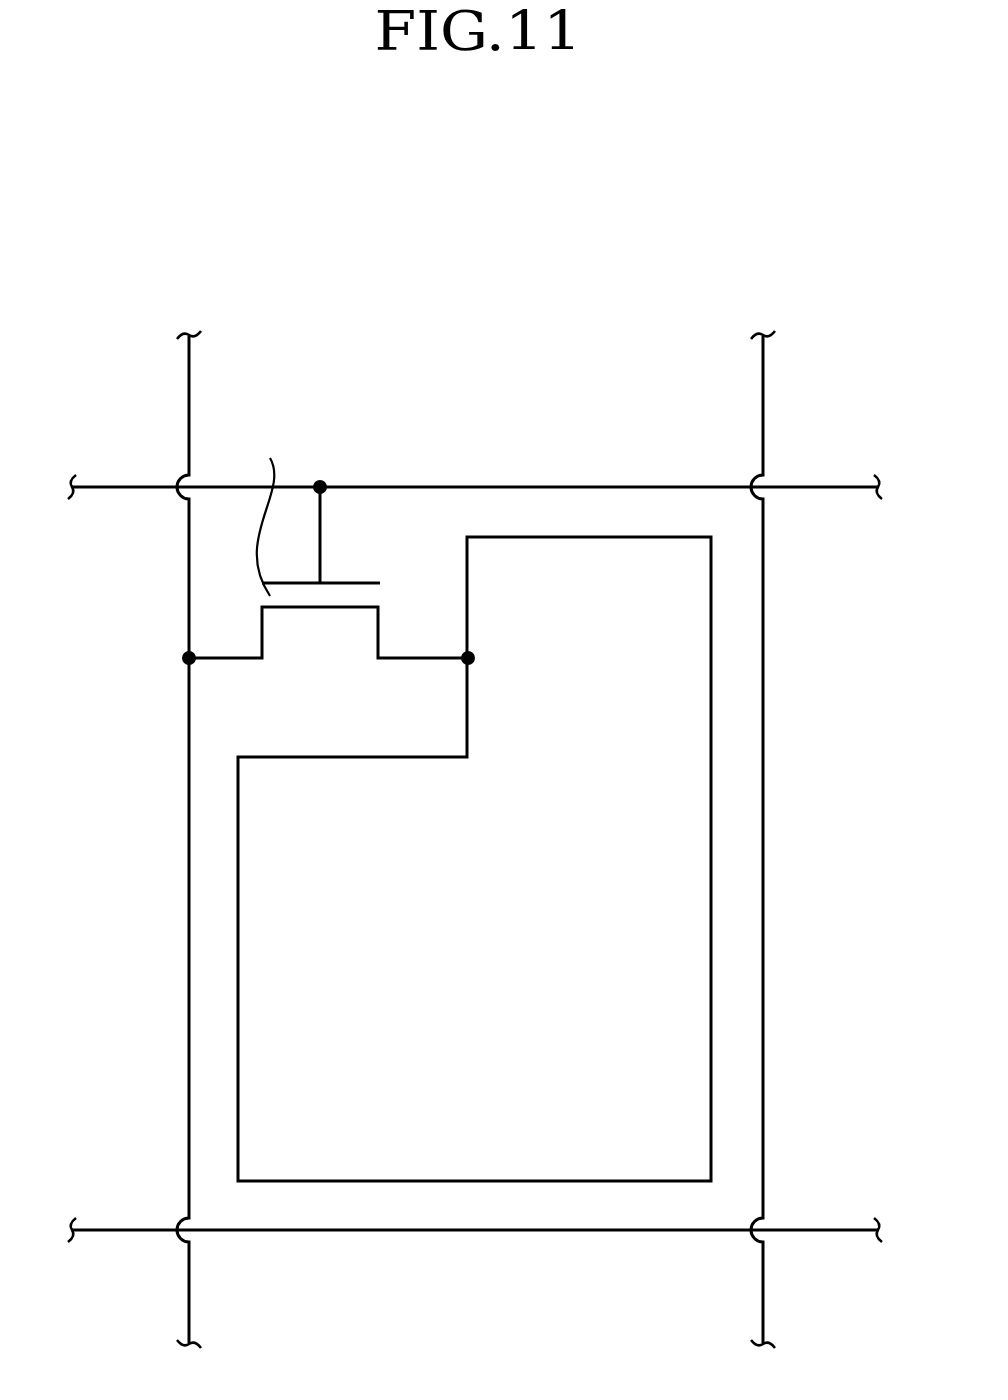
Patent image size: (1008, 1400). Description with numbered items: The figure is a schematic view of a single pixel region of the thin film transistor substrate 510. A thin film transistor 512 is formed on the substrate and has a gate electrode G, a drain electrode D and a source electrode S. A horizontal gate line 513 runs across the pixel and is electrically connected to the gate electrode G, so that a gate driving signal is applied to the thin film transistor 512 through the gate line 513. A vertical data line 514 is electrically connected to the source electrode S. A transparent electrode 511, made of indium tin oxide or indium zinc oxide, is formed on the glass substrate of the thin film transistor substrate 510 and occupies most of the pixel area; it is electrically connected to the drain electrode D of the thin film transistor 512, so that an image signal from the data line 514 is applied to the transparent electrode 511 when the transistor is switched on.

The thin film transistor substrate 510 is at (846, 934).
The transparent electrode 511 is at (663, 790).
The thin film transistor 512 is at (362, 563).
The gate line 513 is at (122, 486).
The data line 514 is at (190, 378).